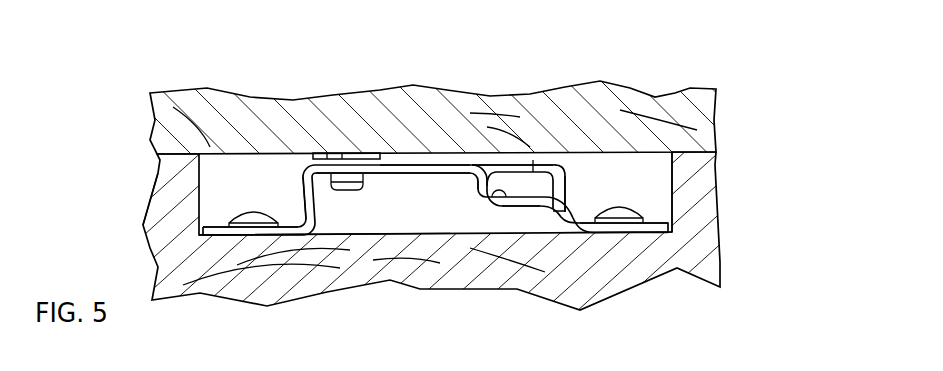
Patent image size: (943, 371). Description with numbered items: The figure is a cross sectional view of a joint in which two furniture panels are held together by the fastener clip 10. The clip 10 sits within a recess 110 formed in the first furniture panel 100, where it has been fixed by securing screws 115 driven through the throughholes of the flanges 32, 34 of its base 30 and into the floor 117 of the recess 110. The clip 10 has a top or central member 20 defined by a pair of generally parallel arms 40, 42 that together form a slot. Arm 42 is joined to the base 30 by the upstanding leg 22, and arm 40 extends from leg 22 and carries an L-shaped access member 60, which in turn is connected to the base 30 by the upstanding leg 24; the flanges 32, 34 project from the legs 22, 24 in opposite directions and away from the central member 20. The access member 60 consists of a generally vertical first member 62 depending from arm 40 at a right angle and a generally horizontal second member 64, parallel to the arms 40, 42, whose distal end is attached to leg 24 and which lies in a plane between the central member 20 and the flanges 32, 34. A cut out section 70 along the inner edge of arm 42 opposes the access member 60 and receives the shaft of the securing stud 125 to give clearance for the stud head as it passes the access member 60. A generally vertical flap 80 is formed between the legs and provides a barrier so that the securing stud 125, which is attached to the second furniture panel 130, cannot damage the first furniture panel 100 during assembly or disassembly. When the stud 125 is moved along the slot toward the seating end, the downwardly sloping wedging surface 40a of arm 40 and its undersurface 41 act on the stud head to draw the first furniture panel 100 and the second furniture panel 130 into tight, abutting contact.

The fastener clip 10 is at (590, 164).
The central member 20 is at (367, 153).
The upstanding leg 22 is at (306, 196).
The upstanding leg 24 is at (566, 234).
The base 30 is at (216, 262).
The flange 32 is at (200, 227).
The flange 34 is at (670, 227).
The arm 40 is at (358, 168).
The wedging surface 40a is at (388, 176).
The undersurface 41 is at (422, 167).
The arm 42 is at (490, 165).
The access member 60 is at (505, 207).
The first member 62 is at (477, 189).
The second member 64 is at (533, 208).
The cut out section 70 is at (525, 163).
The flap 80 is at (566, 181).
The first furniture panel 100 is at (712, 270).
The recess 110 is at (157, 153).
The securing screw 115 is at (224, 216).
The floor 117 is at (447, 235).
The securing stud 125 is at (337, 190).
The second furniture panel 130 is at (183, 105).